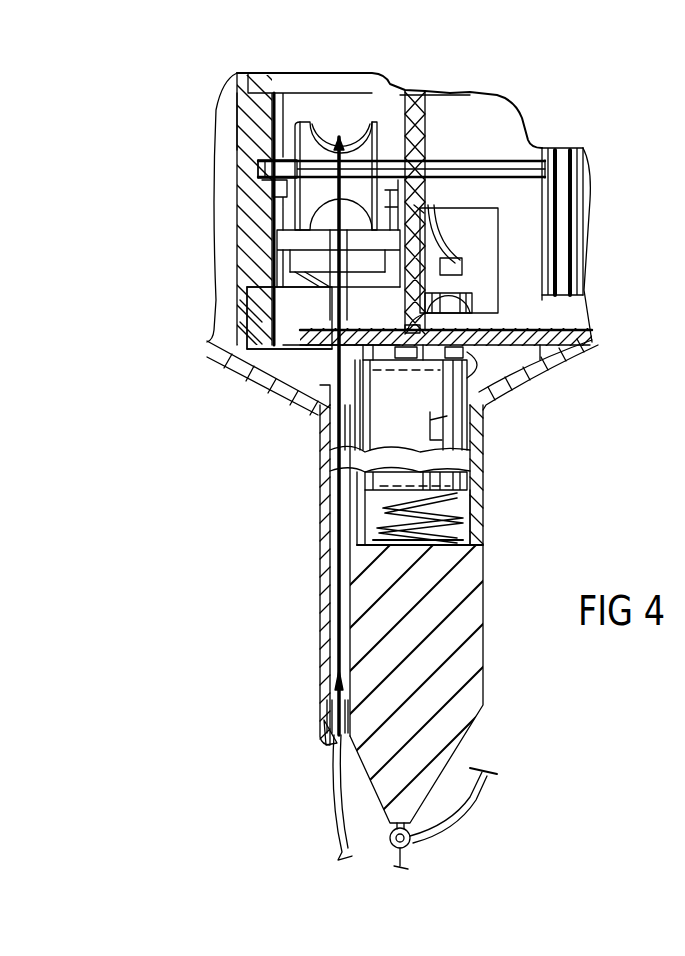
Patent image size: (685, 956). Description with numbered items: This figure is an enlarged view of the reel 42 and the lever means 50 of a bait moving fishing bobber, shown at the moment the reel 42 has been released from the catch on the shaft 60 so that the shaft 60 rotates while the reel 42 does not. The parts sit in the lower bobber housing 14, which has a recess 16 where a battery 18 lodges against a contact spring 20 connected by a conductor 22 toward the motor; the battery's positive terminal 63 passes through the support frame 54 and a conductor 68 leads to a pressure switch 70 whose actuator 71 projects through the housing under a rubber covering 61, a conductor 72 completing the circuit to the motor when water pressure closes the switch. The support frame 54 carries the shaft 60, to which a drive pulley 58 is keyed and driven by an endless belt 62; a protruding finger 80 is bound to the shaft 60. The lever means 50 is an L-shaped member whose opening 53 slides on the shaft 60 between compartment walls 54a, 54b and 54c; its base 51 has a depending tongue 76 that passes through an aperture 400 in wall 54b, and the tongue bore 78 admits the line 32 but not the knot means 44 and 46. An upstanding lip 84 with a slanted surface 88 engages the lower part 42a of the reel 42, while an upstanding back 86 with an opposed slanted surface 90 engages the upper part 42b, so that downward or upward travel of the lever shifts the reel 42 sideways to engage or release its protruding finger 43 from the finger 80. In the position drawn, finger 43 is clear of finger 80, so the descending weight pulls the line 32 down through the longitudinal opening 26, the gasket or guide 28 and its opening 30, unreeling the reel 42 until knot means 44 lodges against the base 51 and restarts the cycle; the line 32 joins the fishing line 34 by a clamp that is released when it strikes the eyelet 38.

The lower bobber housing 14 is at (428, 622).
The recess 16 is at (469, 511).
The battery 18 is at (438, 442).
The contact spring 20 is at (462, 540).
The conductor 22 is at (328, 400).
The longitudinal opening 26 is at (329, 486).
The gasket or guide 28 is at (327, 712).
The opening 30 is at (327, 730).
The line 32 is at (318, 402).
The fishing line 34 is at (460, 813).
The eyelet 38 is at (411, 840).
The reel 42 is at (243, 121).
The lower part of the reel 42a is at (283, 233).
The upper part of the reel 42b is at (362, 138).
The catch means (protruding finger) 43 is at (270, 158).
The knot means 44 is at (262, 263).
The knot means 46 is at (337, 685).
The lever means 50 is at (393, 92).
The base 51 is at (283, 258).
The opening 53 is at (395, 152).
The support frame 54 is at (518, 343).
The compartment wall 54a is at (420, 207).
The compartment wall 54b is at (245, 348).
The compartment wall 54c is at (283, 245).
The drive pulley 58 is at (583, 230).
The shaft 60 is at (507, 160).
The rubber covering 61 is at (470, 362).
The endless belt 62 is at (557, 187).
The positive terminal 63 is at (328, 398).
The conductor 68 is at (497, 387).
The pressure switch 70 is at (590, 341).
The actuator 71 is at (432, 412).
The conductor 72 is at (455, 250).
The tongue 76 is at (348, 290).
The tongue bore 78 is at (348, 305).
The catch means (protruding finger) 80 is at (258, 169).
The upstanding lip 84 is at (283, 225).
The upstanding back 86 is at (401, 127).
The slanted surface 88 is at (283, 215).
The slanted surface 90 is at (358, 103).
The aperture 400 is at (330, 292).